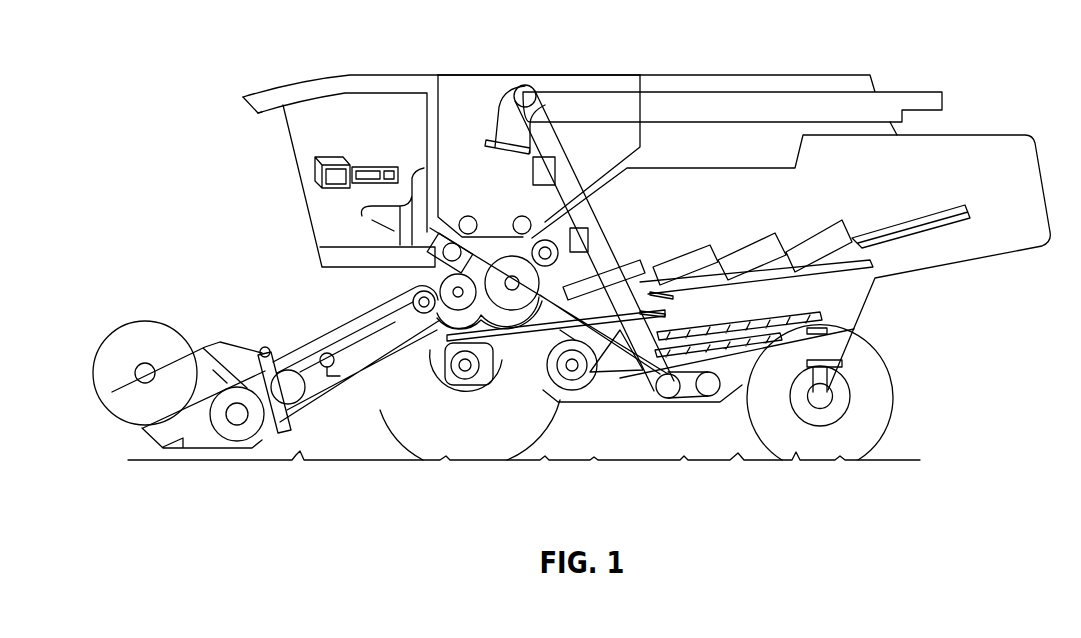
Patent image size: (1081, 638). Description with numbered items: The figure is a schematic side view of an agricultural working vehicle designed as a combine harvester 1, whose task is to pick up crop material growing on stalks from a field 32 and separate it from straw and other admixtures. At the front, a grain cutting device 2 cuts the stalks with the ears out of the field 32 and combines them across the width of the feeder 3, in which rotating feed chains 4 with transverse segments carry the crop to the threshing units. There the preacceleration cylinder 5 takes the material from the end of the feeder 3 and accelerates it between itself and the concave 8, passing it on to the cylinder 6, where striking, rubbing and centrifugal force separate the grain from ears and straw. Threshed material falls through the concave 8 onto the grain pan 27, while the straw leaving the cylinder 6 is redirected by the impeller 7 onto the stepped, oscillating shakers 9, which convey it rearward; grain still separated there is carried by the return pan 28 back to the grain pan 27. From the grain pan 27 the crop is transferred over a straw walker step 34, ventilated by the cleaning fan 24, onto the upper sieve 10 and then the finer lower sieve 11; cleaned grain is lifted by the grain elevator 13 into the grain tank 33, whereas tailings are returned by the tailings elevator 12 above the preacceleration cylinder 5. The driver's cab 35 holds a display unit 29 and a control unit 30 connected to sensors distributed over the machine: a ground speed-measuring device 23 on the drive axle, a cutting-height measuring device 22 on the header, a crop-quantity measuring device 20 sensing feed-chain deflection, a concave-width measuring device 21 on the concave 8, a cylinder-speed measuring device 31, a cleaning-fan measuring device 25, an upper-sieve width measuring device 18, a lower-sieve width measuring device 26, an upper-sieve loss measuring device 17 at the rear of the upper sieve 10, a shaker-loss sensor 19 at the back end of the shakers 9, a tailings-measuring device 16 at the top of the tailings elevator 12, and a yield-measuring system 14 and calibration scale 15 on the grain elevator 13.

The combine harvester 1 is at (272, 82).
The grain cutting device 2 is at (202, 340).
The feeder 3 is at (297, 350).
The feed chains 4 is at (343, 335).
The preacceleration cylinder 5 is at (456, 292).
The cylinder 6 is at (511, 262).
The impeller 7 is at (538, 246).
The concave 8 is at (498, 322).
The shakers 9 is at (767, 248).
The upper sieve 10 is at (741, 333).
The lower sieve 11 is at (773, 366).
The tailings elevator 12 is at (692, 392).
The grain elevator 13 is at (646, 380).
The yield-measuring system 14 is at (528, 177).
The calibration scale 15 is at (557, 226).
The tailings-measuring device 16 is at (421, 258).
The upper-sieve loss measuring device 17 is at (835, 331).
The upper-sieve width measuring device 18 is at (787, 313).
The shaker-loss sensor 19 is at (893, 250).
The crop-quantity measuring device 20 is at (337, 352).
The concave-width measuring device 21 is at (441, 322).
The cutting-height measuring device 22 is at (229, 462).
The ground speed-measuring device 23 is at (467, 394).
The cleaning fan 24 is at (572, 374).
The cleaning-fan measuring device 25 is at (560, 367).
The lower-sieve width measuring device 26 is at (741, 356).
The grain pan 27 is at (556, 330).
The return pan 28 is at (802, 273).
The display unit 29 is at (331, 158).
The control unit 30 is at (373, 167).
The cylinder-speed measuring device 31 is at (522, 288).
The field 32 is at (335, 462).
The grain tank 33 is at (478, 80).
The straw walker step 34 is at (675, 292).
The driver's cab 35 is at (343, 107).